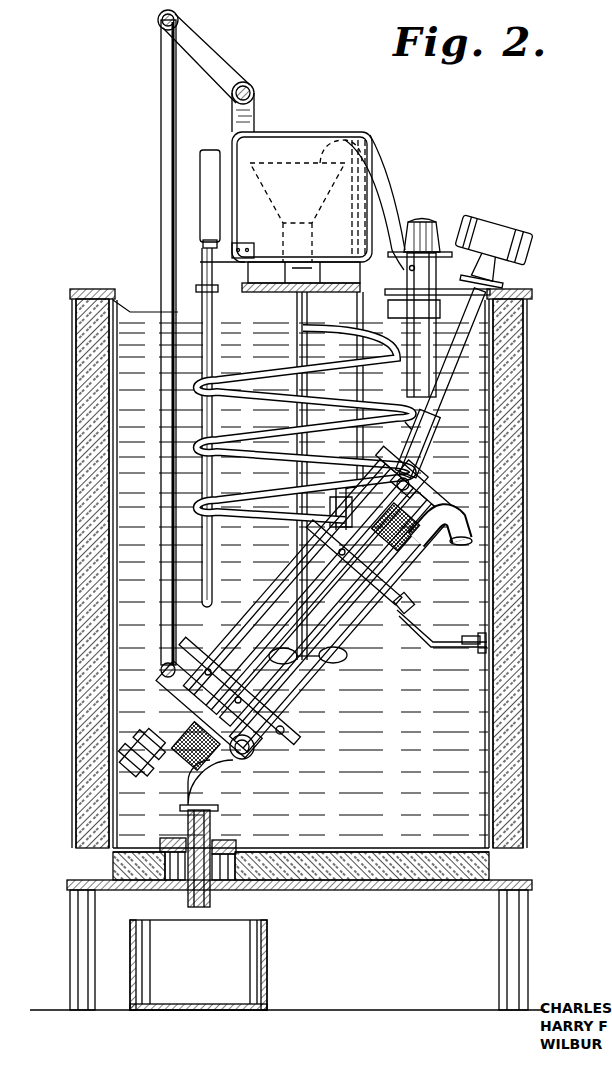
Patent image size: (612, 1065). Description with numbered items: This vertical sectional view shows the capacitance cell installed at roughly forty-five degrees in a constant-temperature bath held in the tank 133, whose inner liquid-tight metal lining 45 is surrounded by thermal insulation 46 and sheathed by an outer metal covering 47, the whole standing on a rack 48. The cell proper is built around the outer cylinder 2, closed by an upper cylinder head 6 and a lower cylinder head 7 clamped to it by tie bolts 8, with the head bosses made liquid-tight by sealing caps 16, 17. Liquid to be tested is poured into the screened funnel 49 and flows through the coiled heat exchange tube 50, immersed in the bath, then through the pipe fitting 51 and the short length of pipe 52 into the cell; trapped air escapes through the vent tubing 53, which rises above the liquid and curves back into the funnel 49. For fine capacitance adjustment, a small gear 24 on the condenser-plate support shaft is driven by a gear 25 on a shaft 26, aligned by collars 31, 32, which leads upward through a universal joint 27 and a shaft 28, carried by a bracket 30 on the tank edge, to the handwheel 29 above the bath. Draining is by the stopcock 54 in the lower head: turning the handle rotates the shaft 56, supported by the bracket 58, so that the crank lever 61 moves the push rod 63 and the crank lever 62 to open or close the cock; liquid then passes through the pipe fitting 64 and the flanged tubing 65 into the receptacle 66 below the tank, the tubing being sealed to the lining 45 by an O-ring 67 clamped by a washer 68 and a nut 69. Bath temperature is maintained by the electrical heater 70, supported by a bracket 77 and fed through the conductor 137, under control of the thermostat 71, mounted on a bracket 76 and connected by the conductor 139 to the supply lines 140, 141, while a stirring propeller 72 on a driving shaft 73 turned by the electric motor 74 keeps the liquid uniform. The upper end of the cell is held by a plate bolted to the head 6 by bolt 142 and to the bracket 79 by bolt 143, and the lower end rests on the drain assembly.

The outer cylinder 2 is at (296, 706).
The upper cylinder head 6 is at (405, 622).
The lower cylinder head 7 is at (285, 735).
The tie bolts 8 is at (280, 598).
The sealing cap 16 is at (410, 514).
The sealing cap 17 is at (190, 758).
The small gear 24 is at (140, 750).
The gear 25 is at (138, 770).
The shaft 26 is at (165, 728).
The universal joint 27 is at (418, 479).
The shaft 28 is at (432, 402).
The handwheel 29 is at (518, 236).
The bracket 30 is at (500, 279).
The collar 31 is at (215, 667).
The collar 32 is at (345, 556).
The inner liquid-tight metal lining 45 is at (123, 850).
The thermal insulation 46 is at (76, 540).
The outer metal covering 47 is at (78, 290).
The rack 48 is at (70, 970).
The screened funnel 49 is at (300, 160).
The coiled heat exchange tube 50 is at (385, 425).
The pipe fitting 51 is at (460, 516).
The short length of pipe 52 is at (428, 588).
The vent tubing 53 is at (357, 385).
The stopcock 54 is at (246, 760).
The shaft 56 is at (250, 85).
The bracket 58 is at (258, 120).
The crank lever 61 is at (236, 60).
The crank lever 62 is at (165, 688).
The push rod 63 is at (161, 153).
The pipe fitting 64 is at (212, 802).
The flanged tubing 65 is at (212, 838).
The receptacle 66 is at (268, 960).
The O-ring 67 is at (160, 843).
The washer 68 is at (226, 882).
The nut 69 is at (168, 882).
The electrical heater 70 is at (210, 433).
The thermostat 71 is at (437, 230).
The stirring propeller 72 is at (338, 664).
The driving shaft 73 is at (300, 533).
The electric motor 74 is at (372, 158).
The bracket 76 is at (436, 288).
The bracket 77 is at (240, 300).
The bracket 79 is at (480, 652).
The tank 133 is at (100, 420).
The conductor 137 is at (205, 150).
The conductor 139 is at (394, 250).
The supply line 140 is at (232, 247).
The supply line leg 141 is at (200, 262).
The bolt 142 is at (412, 612).
The bolt 143 is at (471, 636).